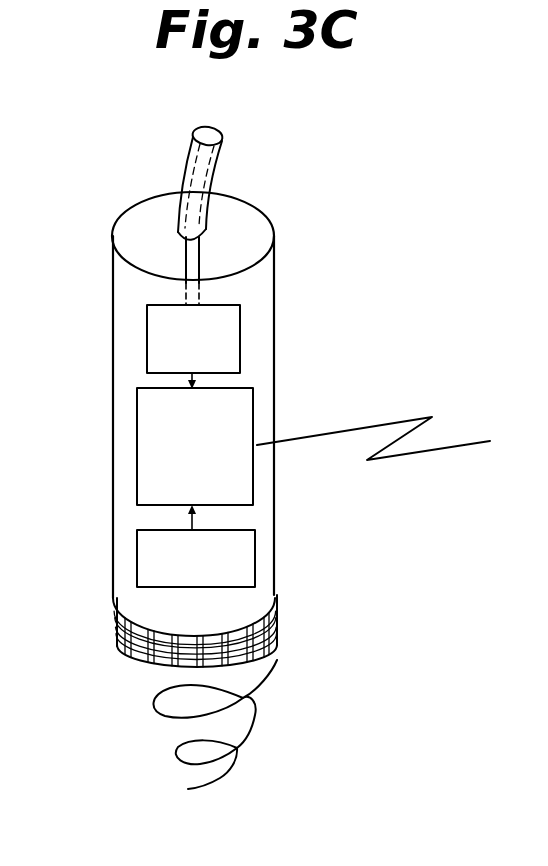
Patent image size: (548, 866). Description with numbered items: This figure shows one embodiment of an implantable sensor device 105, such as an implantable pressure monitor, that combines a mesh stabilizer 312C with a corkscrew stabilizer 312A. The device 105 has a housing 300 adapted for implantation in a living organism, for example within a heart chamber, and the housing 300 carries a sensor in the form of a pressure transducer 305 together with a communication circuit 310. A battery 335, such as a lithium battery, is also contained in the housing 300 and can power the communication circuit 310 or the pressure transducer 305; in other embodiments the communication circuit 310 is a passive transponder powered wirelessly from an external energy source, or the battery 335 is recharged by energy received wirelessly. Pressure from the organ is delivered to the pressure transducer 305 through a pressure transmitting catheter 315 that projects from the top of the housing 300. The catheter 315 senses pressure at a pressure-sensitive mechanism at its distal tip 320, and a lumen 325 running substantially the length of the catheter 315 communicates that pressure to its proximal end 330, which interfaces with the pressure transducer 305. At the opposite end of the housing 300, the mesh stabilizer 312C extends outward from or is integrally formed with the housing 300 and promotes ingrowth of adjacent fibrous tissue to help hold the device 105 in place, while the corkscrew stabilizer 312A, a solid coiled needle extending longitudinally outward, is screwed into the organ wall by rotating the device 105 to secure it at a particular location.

The implantable sensor device 105 is at (100, 508).
The housing 300 is at (275, 273).
The pressure transducer 305 is at (216, 361).
The communication circuit 310 is at (212, 467).
The corkscrew stabilizer 312A is at (233, 767).
The mesh stabilizer 312C is at (278, 641).
The pressure transmitting catheter 315 is at (188, 162).
The distal tip 320 is at (209, 131).
The lumen 325 is at (206, 188).
The proximal end 330 is at (205, 303).
The battery 335 is at (214, 579).